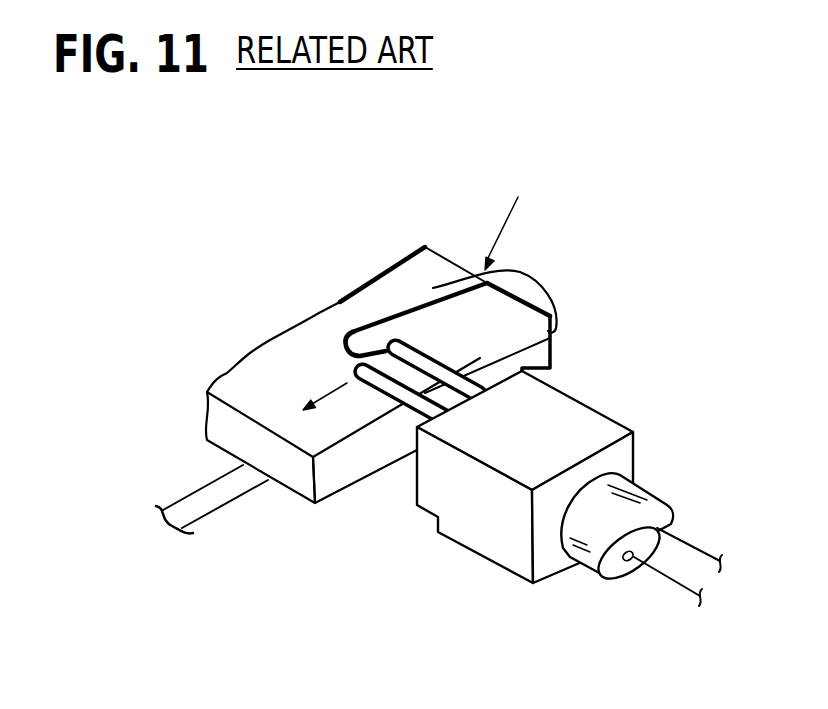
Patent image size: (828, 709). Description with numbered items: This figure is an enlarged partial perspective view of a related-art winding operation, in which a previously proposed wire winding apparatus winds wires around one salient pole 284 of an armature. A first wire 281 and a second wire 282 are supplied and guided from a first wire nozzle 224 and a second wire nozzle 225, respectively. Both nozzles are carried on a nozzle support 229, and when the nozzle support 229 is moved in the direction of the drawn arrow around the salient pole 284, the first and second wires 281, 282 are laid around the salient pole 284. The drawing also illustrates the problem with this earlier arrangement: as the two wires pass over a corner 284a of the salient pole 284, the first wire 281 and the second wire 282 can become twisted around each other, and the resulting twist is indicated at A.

The first wire nozzle 224 is at (537, 503).
The second wire nozzle 225 is at (423, 402).
The nozzle support 229 is at (496, 548).
The first wire 281 is at (425, 318).
The second wire 282 is at (370, 327).
The salient pole 284 is at (298, 482).
The corner of the salient pole 284a is at (430, 252).
The twist A is at (505, 211).